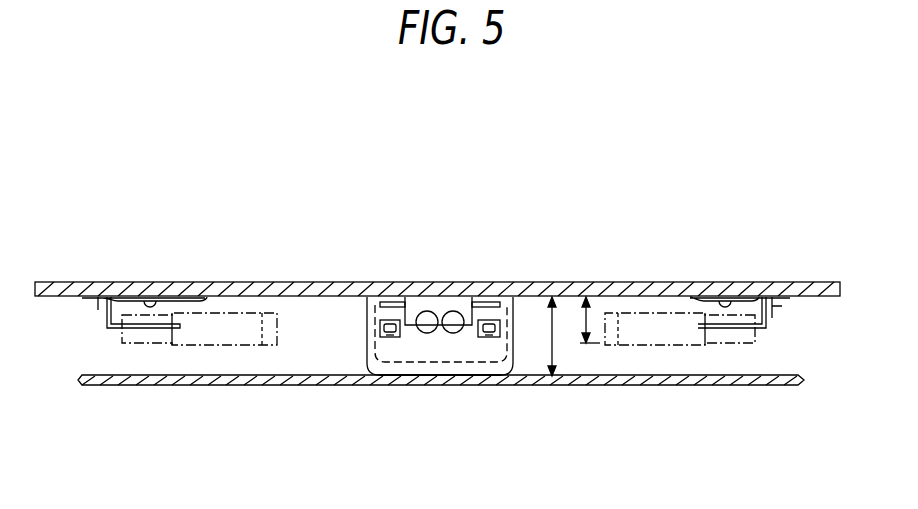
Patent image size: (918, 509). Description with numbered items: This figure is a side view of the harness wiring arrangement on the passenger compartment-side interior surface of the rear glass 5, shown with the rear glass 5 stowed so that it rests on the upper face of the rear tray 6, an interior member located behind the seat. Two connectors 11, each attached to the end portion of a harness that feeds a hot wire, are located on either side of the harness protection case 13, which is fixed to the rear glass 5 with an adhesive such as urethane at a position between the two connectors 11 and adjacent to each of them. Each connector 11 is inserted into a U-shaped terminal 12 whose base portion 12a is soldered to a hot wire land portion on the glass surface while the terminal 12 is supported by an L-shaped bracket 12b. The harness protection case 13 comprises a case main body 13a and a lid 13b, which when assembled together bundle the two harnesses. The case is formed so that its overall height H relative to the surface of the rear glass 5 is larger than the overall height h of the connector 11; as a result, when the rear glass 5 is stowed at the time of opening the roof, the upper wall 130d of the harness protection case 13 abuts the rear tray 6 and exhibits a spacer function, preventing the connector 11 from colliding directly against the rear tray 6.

The rear glass 5 is at (596, 281).
The rear tray 6 is at (690, 387).
The connector 11 is at (236, 314).
The terminal 12 is at (142, 330).
The base portion 12a is at (150, 300).
The L-shaped bracket 12b is at (98, 310).
The harness protection case 13 is at (357, 367).
The case main body 13a is at (430, 305).
The lid 13b is at (470, 358).
The upper wall 130d is at (417, 374).
The overall height of the harness protection case H is at (548, 330).
The overall height of the connector h is at (583, 318).